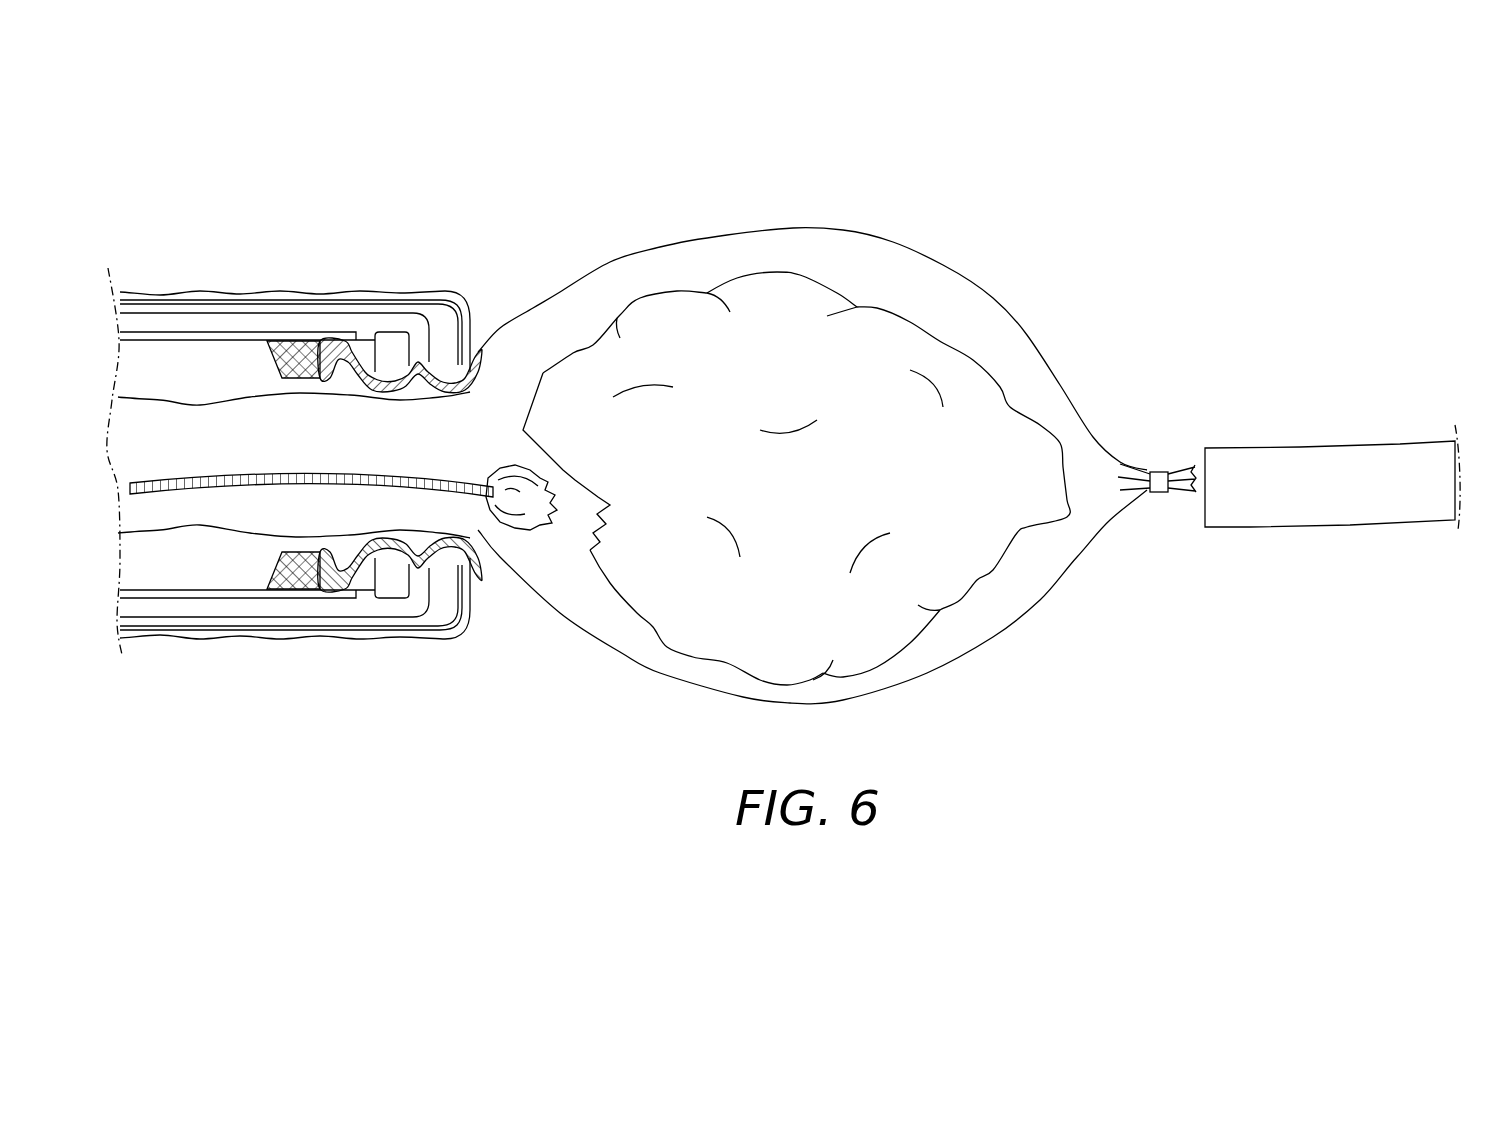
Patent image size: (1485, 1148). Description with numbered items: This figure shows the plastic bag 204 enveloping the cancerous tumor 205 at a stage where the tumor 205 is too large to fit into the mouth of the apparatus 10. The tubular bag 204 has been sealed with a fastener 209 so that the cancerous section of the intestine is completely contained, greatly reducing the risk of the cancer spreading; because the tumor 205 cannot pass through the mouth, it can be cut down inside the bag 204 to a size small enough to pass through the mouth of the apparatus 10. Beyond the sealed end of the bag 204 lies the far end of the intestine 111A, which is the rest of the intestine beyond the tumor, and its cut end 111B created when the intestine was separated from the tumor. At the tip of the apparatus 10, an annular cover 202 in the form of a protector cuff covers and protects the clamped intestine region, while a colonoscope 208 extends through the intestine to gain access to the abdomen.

The apparatus 10 is at (420, 242).
The annular cover 202 is at (470, 350).
The plastic bag 204 is at (1002, 298).
The cancerous tumor 205 is at (814, 474).
The colonoscope 208 is at (434, 470).
The fastener 209 is at (1161, 504).
The far end of the intestine 111A is at (1293, 440).
The cut end 111B is at (1207, 468).